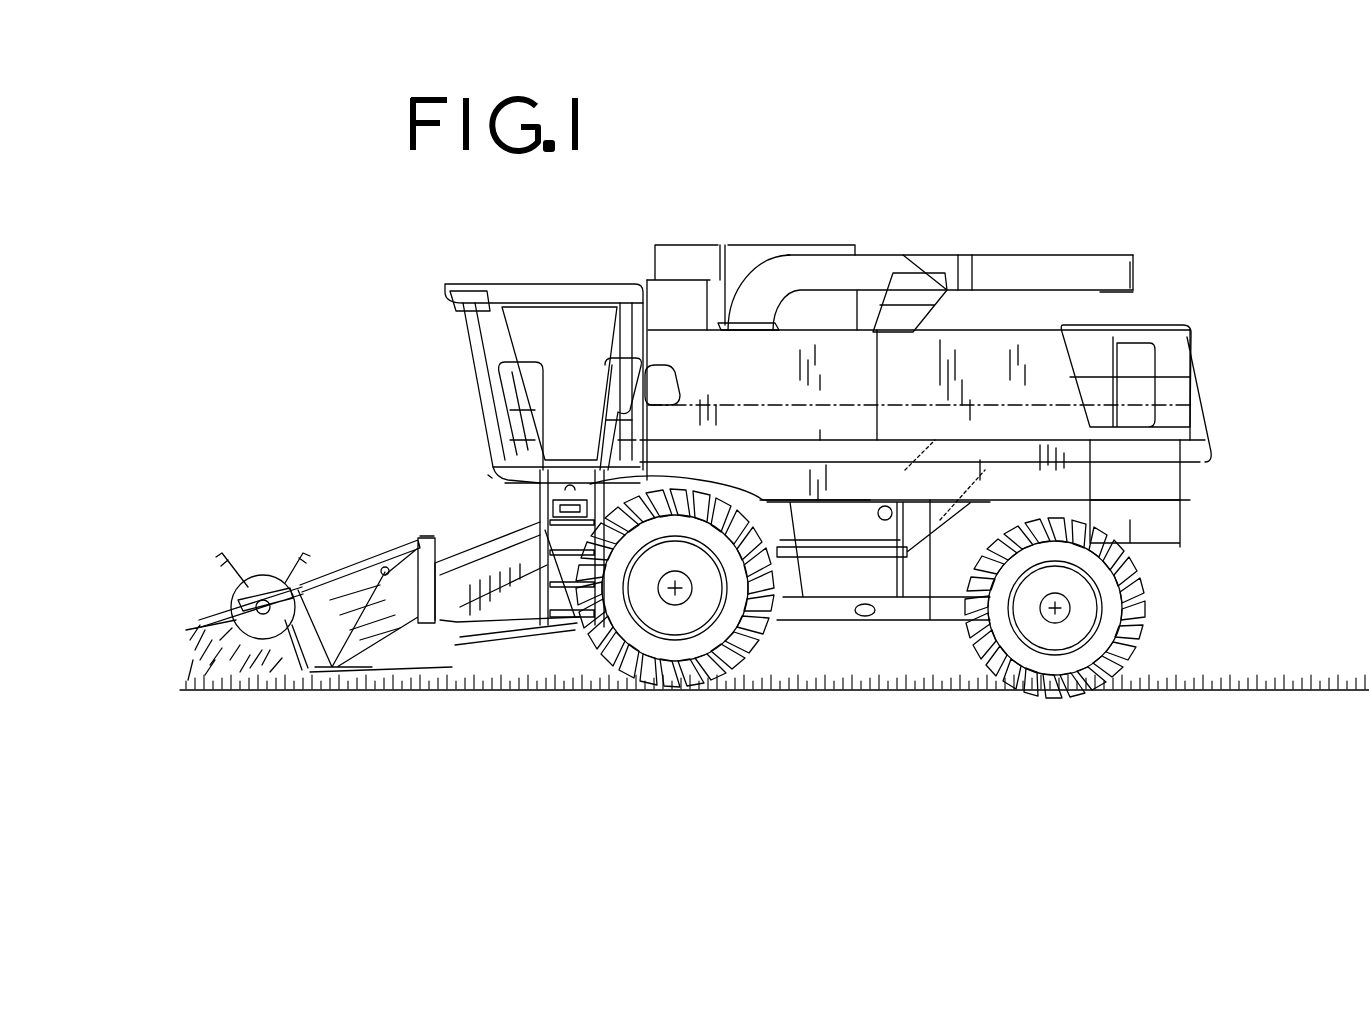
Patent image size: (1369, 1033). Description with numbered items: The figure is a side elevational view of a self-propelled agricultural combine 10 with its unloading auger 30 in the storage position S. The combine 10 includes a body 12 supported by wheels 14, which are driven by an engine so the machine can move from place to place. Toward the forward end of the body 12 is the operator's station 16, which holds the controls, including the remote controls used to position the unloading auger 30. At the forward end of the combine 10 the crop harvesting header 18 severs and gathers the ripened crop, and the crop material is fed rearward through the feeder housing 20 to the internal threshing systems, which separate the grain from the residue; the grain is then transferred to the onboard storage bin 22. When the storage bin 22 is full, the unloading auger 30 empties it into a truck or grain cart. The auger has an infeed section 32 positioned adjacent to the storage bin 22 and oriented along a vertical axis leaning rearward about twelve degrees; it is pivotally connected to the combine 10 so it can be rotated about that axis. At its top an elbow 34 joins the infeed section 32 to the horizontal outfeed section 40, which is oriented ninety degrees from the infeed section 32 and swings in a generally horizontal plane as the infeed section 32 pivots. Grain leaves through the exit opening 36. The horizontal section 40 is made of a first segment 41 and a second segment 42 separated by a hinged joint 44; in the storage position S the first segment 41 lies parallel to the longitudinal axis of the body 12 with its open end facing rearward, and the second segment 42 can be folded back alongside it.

The self-propelled agricultural combine 10 is at (402, 273).
The body 12 is at (822, 420).
The wheels 14 is at (588, 657).
The operator's station 16 is at (468, 368).
The crop harvesting header 18 is at (265, 547).
The feeder housing 20 is at (482, 538).
The onboard storage bin 22 is at (834, 243).
The unloading auger 30 is at (757, 238).
The infeed section 32 is at (720, 310).
The elbow 34 is at (749, 270).
The exit opening 36 is at (894, 340).
The horizontal outfeed section 40 is at (1053, 250).
The first segment 41 is at (815, 250).
The second segment 42 is at (1118, 296).
The hinged joint 44 is at (1142, 271).
The storage position S is at (1021, 215).